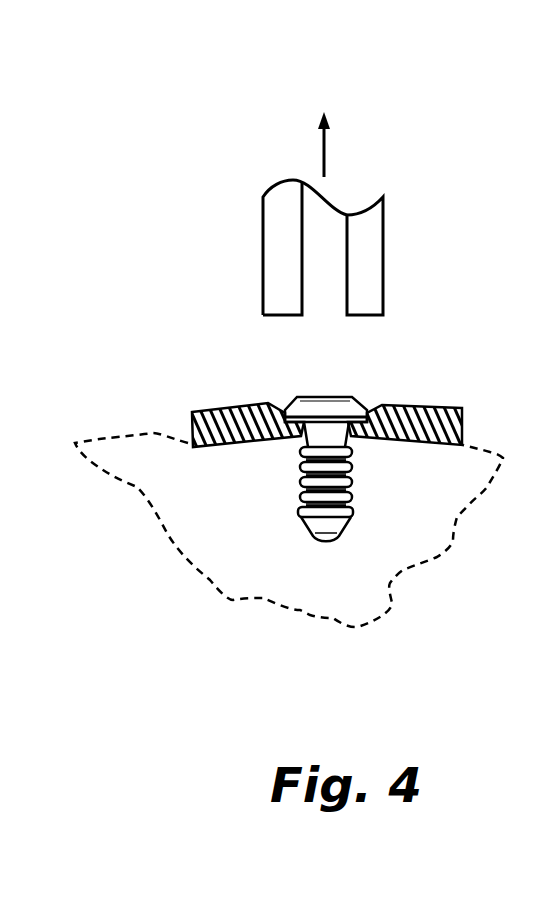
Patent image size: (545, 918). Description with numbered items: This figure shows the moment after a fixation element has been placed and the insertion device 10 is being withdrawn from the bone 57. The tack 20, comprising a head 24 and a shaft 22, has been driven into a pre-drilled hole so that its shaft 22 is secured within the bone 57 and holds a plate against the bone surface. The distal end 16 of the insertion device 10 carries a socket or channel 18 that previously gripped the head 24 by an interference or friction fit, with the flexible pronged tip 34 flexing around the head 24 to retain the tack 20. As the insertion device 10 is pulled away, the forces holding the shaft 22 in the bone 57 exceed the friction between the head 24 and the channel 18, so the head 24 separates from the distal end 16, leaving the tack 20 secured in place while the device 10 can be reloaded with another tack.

The insertion device 10 is at (400, 243).
The distal end 16 is at (258, 307).
The channel 18 is at (367, 320).
The pronged tip 34 is at (271, 254).
The tack 20 is at (305, 397).
The head 24 is at (346, 416).
The shaft 22 is at (346, 489).
The bone 57 is at (192, 532).